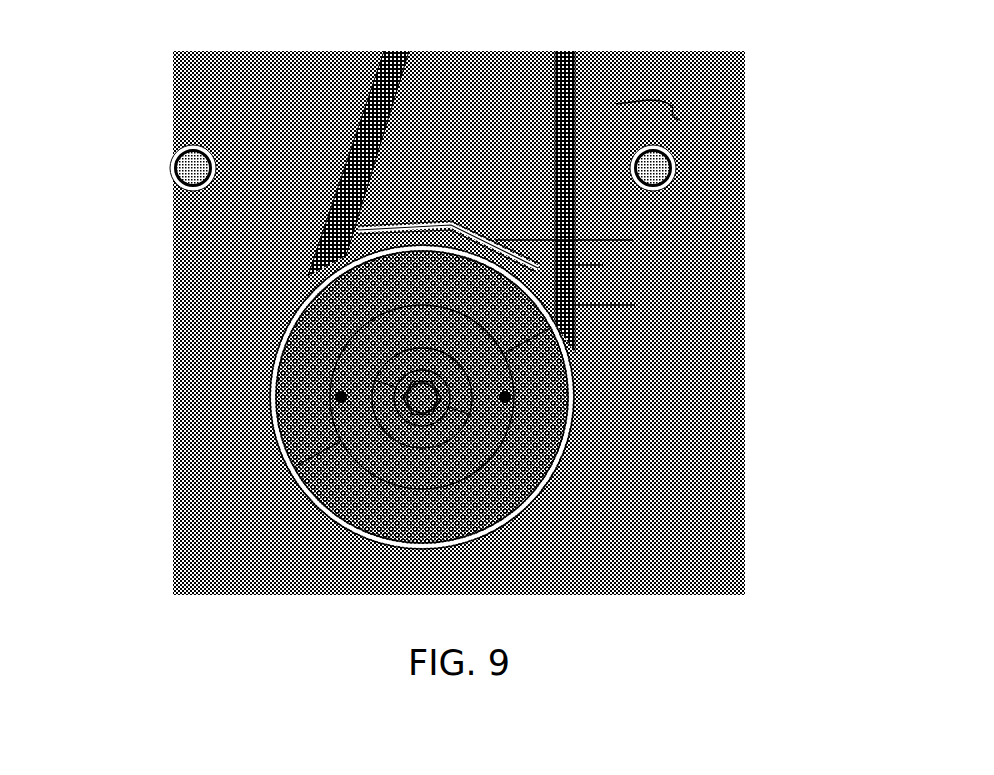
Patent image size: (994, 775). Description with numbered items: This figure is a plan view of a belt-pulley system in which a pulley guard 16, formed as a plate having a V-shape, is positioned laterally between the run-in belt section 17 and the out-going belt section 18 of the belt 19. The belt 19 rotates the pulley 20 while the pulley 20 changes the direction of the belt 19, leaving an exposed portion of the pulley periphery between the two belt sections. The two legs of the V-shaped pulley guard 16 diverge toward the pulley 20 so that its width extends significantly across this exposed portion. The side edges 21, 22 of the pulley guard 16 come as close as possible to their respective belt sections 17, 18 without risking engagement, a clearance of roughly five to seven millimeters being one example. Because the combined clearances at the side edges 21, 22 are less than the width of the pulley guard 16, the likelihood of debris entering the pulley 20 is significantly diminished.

The pulley guard 16 is at (625, 232).
The run-in belt section 17 is at (627, 297).
The out-going belt section 18 is at (345, 236).
The belt 19 is at (672, 112).
The pulley 20 is at (520, 437).
The side edge 21 is at (595, 257).
The side edge 22 is at (350, 214).